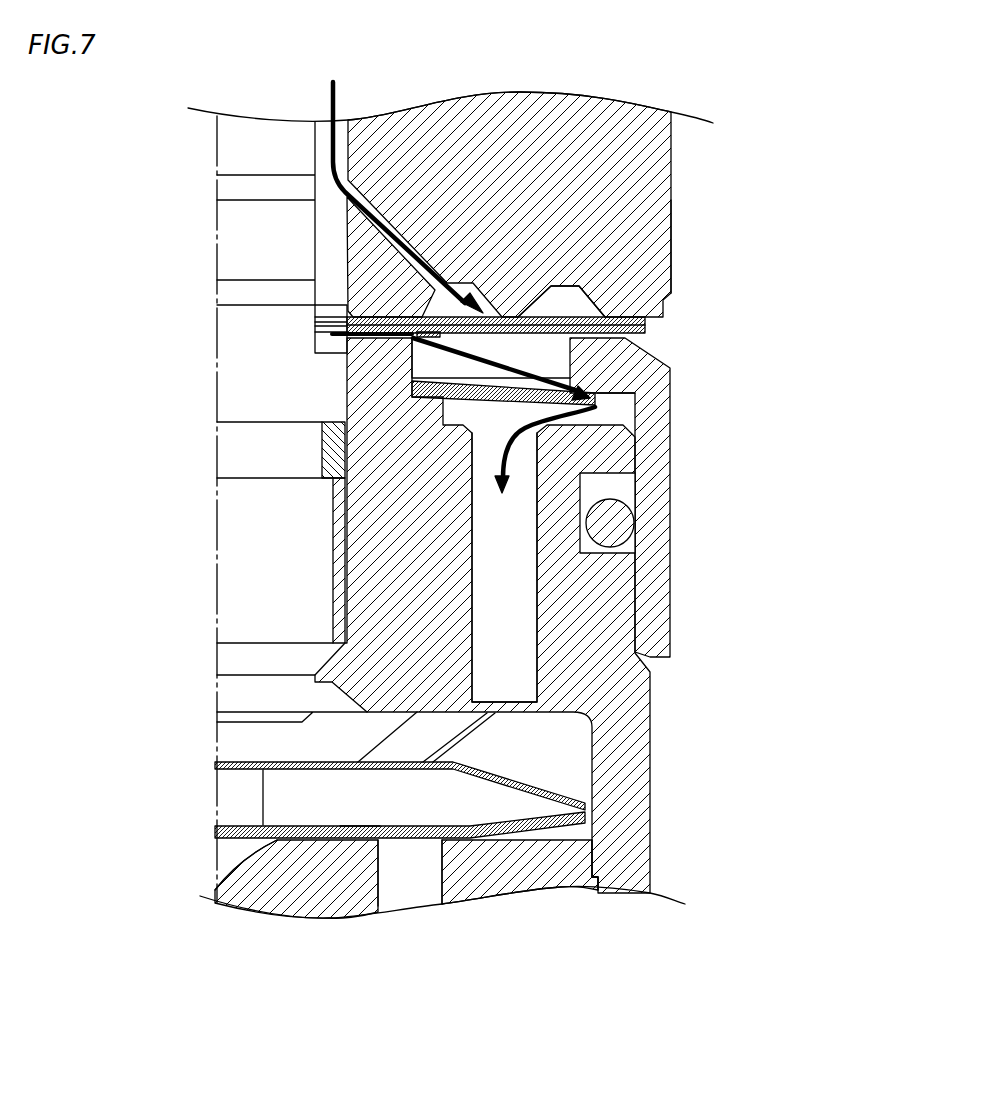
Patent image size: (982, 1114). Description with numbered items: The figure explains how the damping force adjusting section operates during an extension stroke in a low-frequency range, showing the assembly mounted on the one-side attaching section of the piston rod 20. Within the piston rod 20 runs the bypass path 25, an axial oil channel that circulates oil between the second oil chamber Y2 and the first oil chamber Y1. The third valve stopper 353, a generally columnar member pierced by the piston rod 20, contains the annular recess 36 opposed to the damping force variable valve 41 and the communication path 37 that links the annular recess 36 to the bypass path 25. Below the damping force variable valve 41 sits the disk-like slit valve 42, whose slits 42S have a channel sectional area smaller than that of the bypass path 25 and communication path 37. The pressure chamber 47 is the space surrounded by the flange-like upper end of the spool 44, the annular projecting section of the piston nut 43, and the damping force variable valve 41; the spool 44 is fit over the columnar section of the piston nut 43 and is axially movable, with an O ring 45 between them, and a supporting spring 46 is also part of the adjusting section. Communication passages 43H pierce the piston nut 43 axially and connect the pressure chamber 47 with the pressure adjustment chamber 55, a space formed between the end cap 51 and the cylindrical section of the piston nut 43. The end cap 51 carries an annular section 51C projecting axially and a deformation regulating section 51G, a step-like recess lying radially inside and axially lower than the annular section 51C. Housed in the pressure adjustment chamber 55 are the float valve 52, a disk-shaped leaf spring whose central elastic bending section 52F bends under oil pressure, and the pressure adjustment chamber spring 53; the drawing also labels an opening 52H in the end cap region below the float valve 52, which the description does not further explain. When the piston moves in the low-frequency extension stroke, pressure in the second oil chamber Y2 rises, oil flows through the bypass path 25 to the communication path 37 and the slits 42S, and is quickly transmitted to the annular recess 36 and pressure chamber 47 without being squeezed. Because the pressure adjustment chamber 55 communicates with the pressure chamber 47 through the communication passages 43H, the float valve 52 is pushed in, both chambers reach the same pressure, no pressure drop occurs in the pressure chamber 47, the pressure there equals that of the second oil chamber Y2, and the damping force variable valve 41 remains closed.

The piston rod 20 is at (232, 557).
The bypass path 25 is at (320, 257).
The communication path 37 is at (390, 232).
The third valve stopper 353 is at (663, 257).
The annular recess 36 is at (570, 300).
The damping force variable valve 41 is at (647, 327).
The slit 42S is at (402, 340).
The pressure chamber 47 is at (452, 374).
The slit valve 42 is at (400, 336).
The supporting spring 46 is at (597, 408).
The spool 44 is at (670, 478).
The O ring 45 is at (612, 528).
The piston nut 43 is at (625, 712).
The communication passage 43H is at (505, 600).
The pressure adjustment chamber 55 is at (562, 757).
The pressure adjustment chamber spring 53 is at (215, 766).
The float valve 52 is at (585, 813).
The elastic bending section 52F is at (367, 818).
The end cap 51 is at (228, 868).
The deformation regulating section 51G is at (293, 842).
The hole 52H is at (412, 885).
The annular section 51C is at (582, 830).
The first oil chamber Y1 is at (834, 356).
The second oil chamber Y2 is at (352, 61).